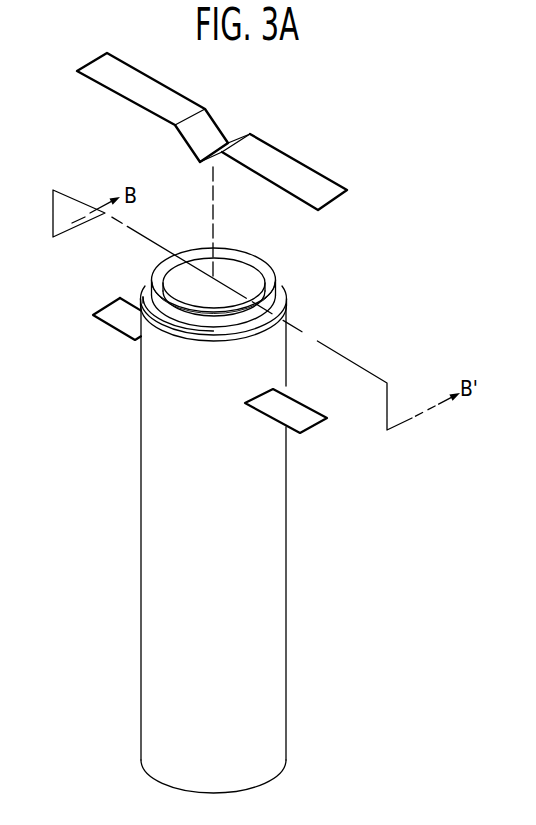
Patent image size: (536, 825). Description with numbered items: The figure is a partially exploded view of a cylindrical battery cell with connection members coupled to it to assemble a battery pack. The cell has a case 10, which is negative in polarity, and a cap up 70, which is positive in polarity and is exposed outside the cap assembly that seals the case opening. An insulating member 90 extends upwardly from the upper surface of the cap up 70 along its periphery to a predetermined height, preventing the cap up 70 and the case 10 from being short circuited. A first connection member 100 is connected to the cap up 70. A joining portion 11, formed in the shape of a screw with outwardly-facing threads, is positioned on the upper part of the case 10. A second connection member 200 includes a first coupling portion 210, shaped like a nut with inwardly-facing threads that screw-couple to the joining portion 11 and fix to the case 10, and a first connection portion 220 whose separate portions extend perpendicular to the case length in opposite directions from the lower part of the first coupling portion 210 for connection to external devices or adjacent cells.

The case 10 is at (163, 617).
The joining portion 11 is at (142, 292).
The cap up 70 is at (242, 272).
The insulating member 90 is at (173, 256).
The first connection member 100 is at (135, 90).
The second connection member 200 is at (249, 344).
The first coupling portion 210 is at (284, 386).
The first connection portion 220 is at (226, 365).